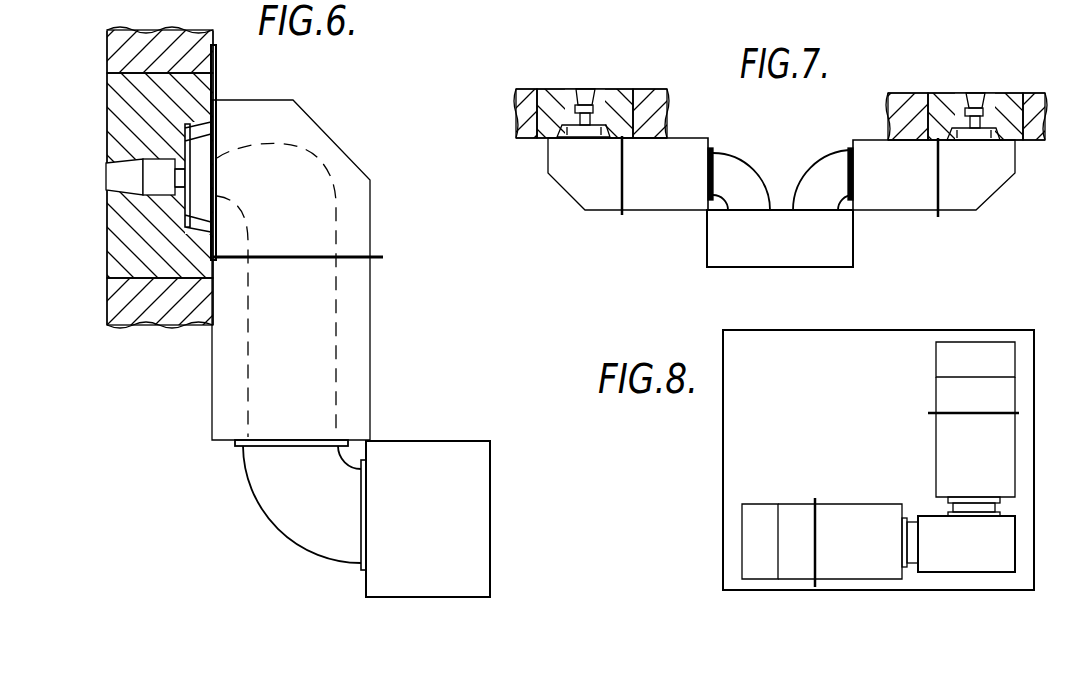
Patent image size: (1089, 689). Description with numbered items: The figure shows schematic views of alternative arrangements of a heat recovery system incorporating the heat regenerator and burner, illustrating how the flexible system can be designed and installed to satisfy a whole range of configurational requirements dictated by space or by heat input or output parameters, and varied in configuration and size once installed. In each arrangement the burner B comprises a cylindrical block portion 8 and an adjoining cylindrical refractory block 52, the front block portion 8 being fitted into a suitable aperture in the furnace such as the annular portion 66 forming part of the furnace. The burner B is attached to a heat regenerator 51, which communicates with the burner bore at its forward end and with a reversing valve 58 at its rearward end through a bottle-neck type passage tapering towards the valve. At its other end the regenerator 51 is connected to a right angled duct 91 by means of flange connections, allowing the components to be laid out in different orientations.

In FIG. 6, the cylindrical block portion 8 is at (127, 243).
In FIG. 7, the cylindrical block portion 8 is at (545, 110).
In FIG. 8, the cylindrical block portion 8 is at (950, 352).
In FIG. 6, the annular portion 66 is at (200, 52).
In FIG. 7, the annular portion 66 is at (660, 120).
In FIG. 6, the burner B is at (258, 100).
In FIG. 7, the burner B is at (548, 143).
In FIG. 8, the burner B is at (932, 380).
In FIG. 6, the cylindrical refractory block 52 is at (350, 168).
In FIG. 7, the cylindrical refractory block 52 is at (578, 180).
In FIG. 8, the cylindrical refractory block 52 is at (948, 396).
In FIG. 6, the heat regenerator 51 is at (362, 320).
In FIG. 7, the heat regenerator 51 is at (677, 200).
In FIG. 8, the heat regenerator 51 is at (943, 430).
In FIG. 6, the reversing valve 58 is at (478, 472).
In FIG. 7, the reversing valve 58 is at (712, 250).
In FIG. 8, the reversing valve 58 is at (932, 520).
In FIG. 6, the right angled duct 91 is at (268, 486).
In FIG. 7, the right angled duct 91 is at (815, 168).